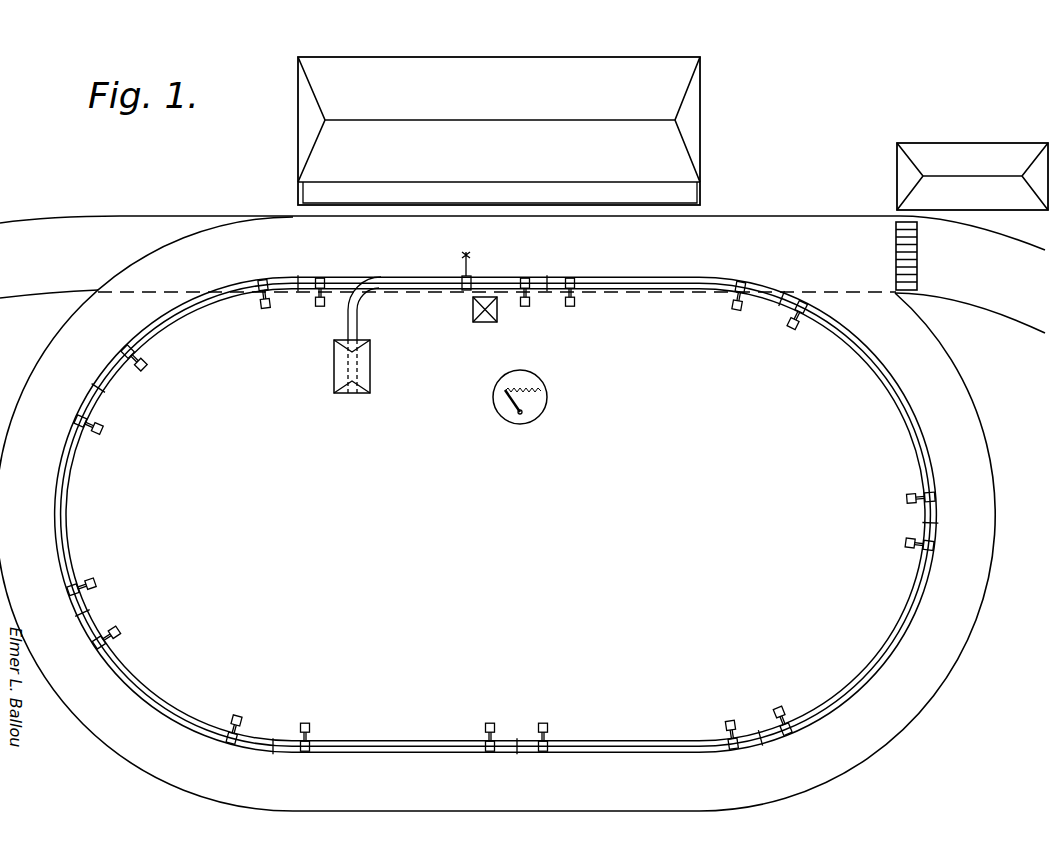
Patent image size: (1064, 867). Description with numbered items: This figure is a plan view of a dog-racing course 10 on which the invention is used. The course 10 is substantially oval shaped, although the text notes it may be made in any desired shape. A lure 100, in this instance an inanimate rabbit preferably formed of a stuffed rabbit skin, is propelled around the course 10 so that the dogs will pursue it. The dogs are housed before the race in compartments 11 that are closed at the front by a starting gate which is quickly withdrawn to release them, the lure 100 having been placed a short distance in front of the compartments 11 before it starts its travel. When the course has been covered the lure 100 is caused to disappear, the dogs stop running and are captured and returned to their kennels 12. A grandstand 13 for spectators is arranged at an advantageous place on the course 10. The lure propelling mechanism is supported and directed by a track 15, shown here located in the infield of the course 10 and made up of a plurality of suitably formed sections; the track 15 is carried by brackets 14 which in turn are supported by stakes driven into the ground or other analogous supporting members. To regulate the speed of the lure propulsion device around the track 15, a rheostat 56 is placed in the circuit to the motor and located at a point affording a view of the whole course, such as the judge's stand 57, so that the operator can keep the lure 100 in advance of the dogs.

The course 10 is at (903, 698).
The compartments 11 is at (917, 251).
The kennels 12 is at (917, 147).
The grandstand 13 is at (692, 137).
The brackets 14 is at (140, 352).
The track 15 is at (698, 289).
The rheostat 56 is at (547, 403).
The judge's stand 57 is at (497, 322).
The lure 100 is at (470, 256).